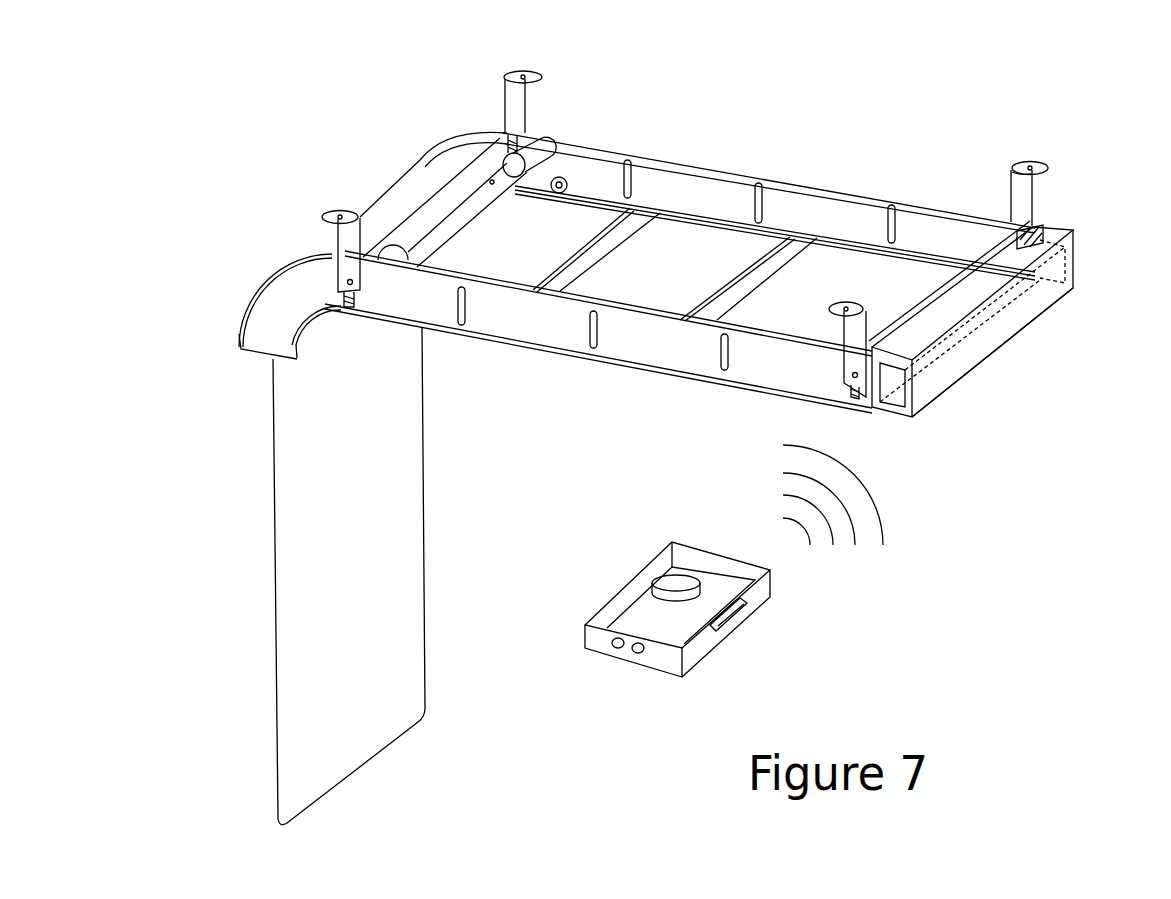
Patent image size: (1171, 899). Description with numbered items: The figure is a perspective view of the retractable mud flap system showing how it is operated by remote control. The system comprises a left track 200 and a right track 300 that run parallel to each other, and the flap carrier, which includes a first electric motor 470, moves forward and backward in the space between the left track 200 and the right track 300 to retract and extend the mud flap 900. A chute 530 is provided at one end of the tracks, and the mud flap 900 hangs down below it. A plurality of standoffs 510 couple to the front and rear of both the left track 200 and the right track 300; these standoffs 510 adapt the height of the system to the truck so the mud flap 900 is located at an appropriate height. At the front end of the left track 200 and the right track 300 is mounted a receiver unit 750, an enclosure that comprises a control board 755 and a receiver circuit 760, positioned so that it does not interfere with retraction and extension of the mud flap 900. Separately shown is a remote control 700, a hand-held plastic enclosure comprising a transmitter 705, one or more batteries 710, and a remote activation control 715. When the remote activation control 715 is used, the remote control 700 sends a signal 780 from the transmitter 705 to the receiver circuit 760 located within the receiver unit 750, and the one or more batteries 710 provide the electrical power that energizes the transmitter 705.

The left track 200 is at (858, 230).
The right track 300 is at (547, 317).
The first electric motor 470 is at (557, 145).
The plurality of standoffs 510 is at (338, 213).
The chute 530 is at (276, 300).
The remote control 700 is at (739, 585).
The transmitter 705 is at (745, 600).
The one or more batteries 710 is at (637, 657).
The remote activation control 715 is at (770, 570).
The receiver unit 750 is at (1012, 323).
The control board 755 is at (1022, 323).
The receiver circuit 760 is at (1040, 232).
The signal 780 is at (882, 508).
The mud flap 900 is at (312, 620).